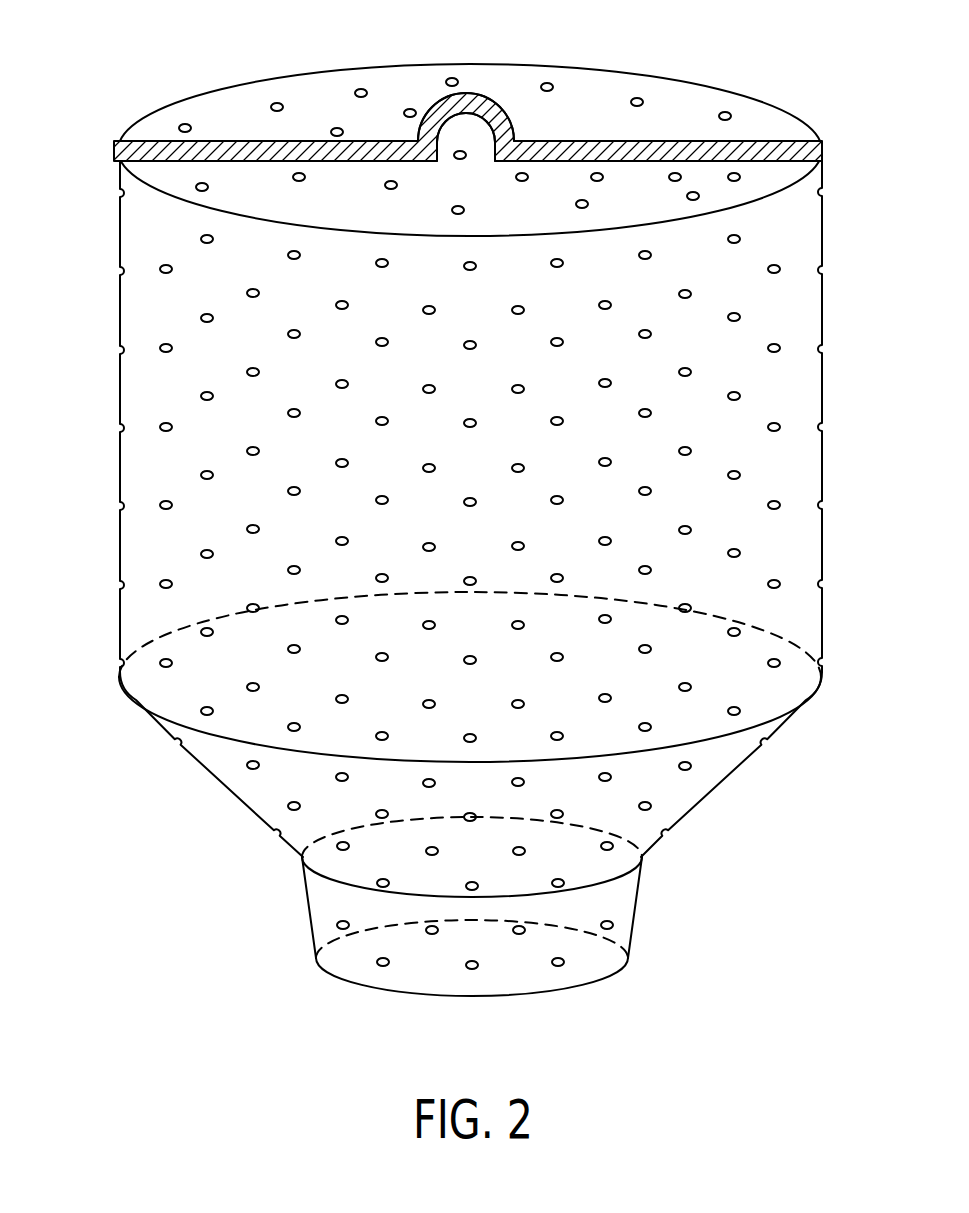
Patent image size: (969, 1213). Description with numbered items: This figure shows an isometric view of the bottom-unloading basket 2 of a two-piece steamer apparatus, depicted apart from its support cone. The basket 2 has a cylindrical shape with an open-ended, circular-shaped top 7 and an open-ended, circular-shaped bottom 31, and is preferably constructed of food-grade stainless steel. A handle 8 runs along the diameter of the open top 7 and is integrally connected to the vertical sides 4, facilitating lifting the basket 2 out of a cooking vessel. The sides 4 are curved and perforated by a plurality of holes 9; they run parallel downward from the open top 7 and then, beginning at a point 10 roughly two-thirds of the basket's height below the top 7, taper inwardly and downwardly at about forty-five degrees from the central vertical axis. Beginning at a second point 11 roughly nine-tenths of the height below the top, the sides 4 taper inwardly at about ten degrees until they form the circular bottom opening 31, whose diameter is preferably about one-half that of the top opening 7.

The bottom-unloading basket 2 is at (117, 562).
The vertical sides 4 is at (104, 378).
The open-ended, circular-shaped top 7 is at (584, 90).
The handle 8 is at (432, 92).
The holes 9 is at (704, 604).
The point 10 is at (108, 683).
The second point 11 is at (298, 865).
The circular bottom opening 31 is at (557, 1000).